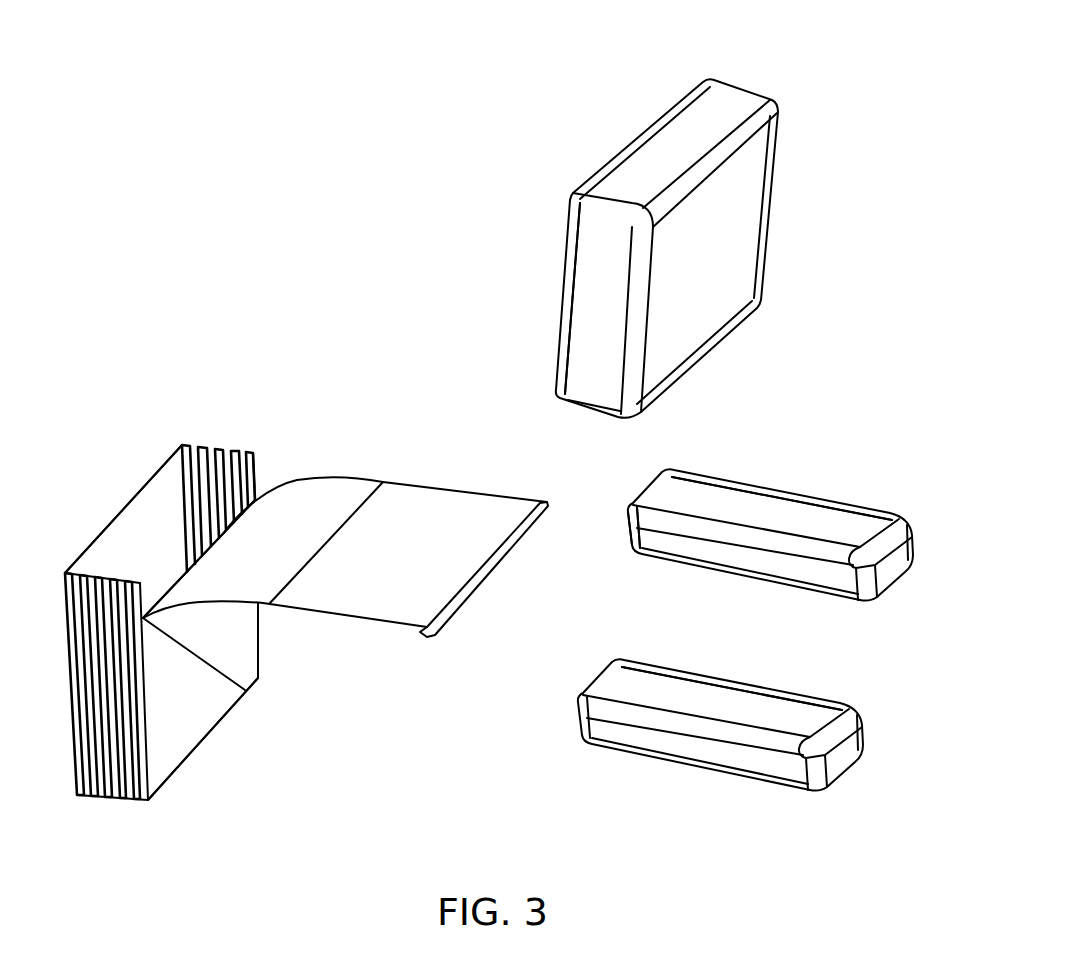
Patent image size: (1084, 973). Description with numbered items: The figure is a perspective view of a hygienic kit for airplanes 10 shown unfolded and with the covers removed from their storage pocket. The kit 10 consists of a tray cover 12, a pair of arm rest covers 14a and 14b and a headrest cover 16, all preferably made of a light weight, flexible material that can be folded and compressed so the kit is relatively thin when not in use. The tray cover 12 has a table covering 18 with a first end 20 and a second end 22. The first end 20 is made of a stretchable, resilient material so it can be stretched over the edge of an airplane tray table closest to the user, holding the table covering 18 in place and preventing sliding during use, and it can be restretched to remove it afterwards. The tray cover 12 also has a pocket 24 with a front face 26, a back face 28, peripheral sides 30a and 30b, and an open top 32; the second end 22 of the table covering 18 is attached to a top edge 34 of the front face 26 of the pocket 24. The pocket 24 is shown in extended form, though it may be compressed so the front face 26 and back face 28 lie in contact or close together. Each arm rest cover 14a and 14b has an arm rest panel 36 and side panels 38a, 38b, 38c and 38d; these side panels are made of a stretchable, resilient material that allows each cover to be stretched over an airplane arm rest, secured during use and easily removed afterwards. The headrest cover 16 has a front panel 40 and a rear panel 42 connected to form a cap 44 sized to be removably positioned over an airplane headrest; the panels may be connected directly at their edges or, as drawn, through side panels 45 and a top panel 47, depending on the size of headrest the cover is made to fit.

The hygienic kit for airplanes 10 is at (280, 141).
The tray cover 12 is at (186, 616).
The arm rest cover 14a is at (703, 770).
The arm rest cover 14b is at (767, 490).
The headrest cover 16 is at (672, 216).
The table covering 18 is at (345, 559).
The first end 20 is at (474, 605).
The second end 22 is at (228, 532).
The pocket 24 is at (172, 767).
The front face 26 is at (207, 733).
The back face 28 is at (152, 477).
The peripheral side 30a is at (95, 790).
The peripheral side 30b is at (230, 450).
The open top 32 is at (158, 535).
The top edge 34 is at (245, 690).
The arm rest panel 36 is at (805, 515).
The side panel 38a is at (622, 527).
The side panel 38b is at (725, 557).
The side panel 38c is at (888, 567).
The side panel 38d is at (727, 480).
The front panel 40 is at (743, 243).
The rear panel 42 is at (563, 280).
The cap 44 is at (723, 80).
The side panels 45 is at (588, 315).
The top panel 47 is at (710, 113).